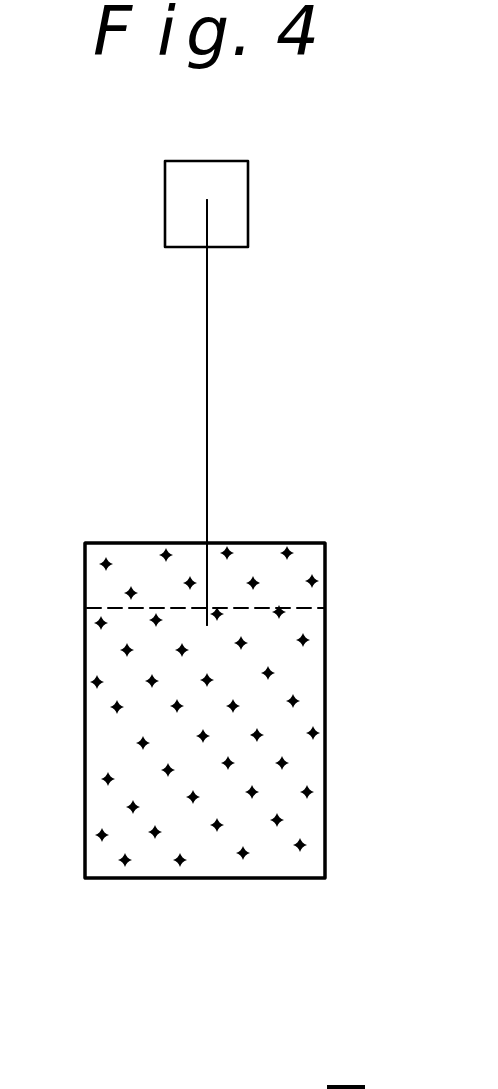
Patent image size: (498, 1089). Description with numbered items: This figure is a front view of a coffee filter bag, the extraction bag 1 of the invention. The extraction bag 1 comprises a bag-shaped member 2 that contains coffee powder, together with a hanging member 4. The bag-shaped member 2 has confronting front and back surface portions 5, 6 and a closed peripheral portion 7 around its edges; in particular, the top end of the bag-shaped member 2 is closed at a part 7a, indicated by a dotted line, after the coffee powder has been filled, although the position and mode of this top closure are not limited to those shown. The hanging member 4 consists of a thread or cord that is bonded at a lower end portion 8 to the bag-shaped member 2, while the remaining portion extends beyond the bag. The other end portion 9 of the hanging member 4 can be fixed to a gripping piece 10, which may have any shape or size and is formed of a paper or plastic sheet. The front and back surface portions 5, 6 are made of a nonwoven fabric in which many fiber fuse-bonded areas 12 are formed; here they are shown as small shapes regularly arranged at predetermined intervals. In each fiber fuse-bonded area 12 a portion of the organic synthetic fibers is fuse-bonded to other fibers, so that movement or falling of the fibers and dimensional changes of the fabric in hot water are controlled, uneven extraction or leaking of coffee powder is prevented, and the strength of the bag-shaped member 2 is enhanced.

The extraction bag 1 is at (299, 510).
The bag-shaped member 2 is at (318, 690).
The hanging member 4 is at (207, 345).
The front surface portion 5 is at (303, 665).
The back surface portion 6 is at (205, 743).
The closed peripheral portion 7 is at (85, 676).
The top end closed part 7a is at (84, 588).
The lower end portion of the hanging member 8 is at (207, 590).
The lower end portion of the hanging member 9 is at (207, 235).
The gripping piece 10 is at (237, 190).
The fiber fuse-bonded area 12 is at (313, 733).